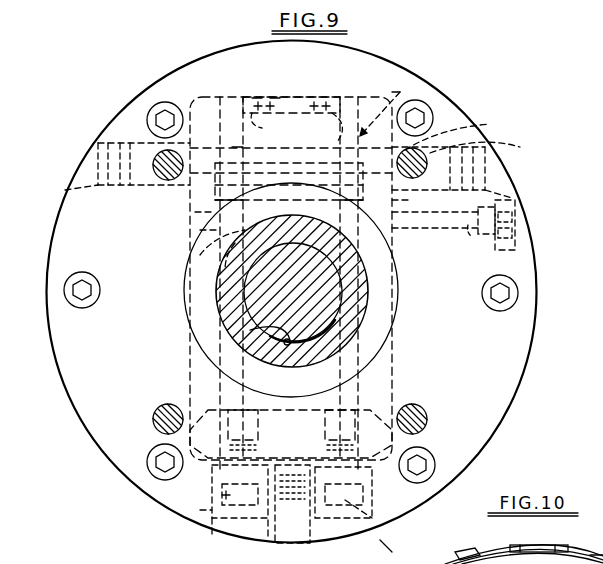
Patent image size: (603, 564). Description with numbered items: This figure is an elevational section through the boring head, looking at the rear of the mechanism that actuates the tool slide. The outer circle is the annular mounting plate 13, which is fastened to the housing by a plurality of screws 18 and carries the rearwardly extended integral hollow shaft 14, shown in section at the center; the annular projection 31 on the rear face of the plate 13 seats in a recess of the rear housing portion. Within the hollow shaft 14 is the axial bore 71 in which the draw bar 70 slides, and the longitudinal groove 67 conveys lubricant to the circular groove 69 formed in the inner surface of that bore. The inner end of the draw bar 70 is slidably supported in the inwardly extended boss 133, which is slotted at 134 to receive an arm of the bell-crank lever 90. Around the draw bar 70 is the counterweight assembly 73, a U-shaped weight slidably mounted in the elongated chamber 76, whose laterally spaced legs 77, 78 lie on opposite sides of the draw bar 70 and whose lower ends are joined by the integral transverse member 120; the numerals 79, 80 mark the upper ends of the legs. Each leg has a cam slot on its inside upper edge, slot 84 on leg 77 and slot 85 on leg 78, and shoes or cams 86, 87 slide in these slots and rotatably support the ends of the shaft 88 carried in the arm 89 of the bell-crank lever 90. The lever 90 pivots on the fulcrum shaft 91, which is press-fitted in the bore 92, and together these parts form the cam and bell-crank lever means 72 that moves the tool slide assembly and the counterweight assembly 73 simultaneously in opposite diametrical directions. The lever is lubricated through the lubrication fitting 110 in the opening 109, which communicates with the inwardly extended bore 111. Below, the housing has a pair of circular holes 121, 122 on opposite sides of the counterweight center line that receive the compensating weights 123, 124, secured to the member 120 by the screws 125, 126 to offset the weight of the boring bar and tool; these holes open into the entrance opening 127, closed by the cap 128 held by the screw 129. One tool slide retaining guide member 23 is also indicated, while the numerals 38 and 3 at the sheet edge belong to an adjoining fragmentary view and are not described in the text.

In FIG. 9, the annular mounting plate 13 is at (497, 396).
In FIG. 9, the screws 18 is at (158, 118).
In FIG. 9, the hollow shaft 14 is at (367, 302).
In FIG. 9, the annular projection 31 is at (392, 274).
In FIG. 9, the draw bar 70 is at (347, 325).
In FIG. 9, the axial bore 71 is at (345, 312).
In FIG. 9, the circular groove 69 is at (343, 303).
In FIG. 9, the longitudinal groove 67 is at (347, 322).
In FIG. 9, the cam and bell-crank lever means 72 is at (342, 97).
In FIG. 9, the counterweight assembly 73 is at (400, 92).
In FIG. 9, the upper end of weight leg 80 is at (328, 106).
In FIG. 9, the arm of bell-crank lever 89 is at (256, 97).
In FIG. 9, the bell-crank lever 90 is at (274, 107).
In FIG. 9, the cam slot 84 is at (380, 116).
In FIG. 9, the upper end of weight leg 79 is at (232, 147).
In FIG. 9, the cam slot 85 is at (190, 193).
In FIG. 9, the shaft 88 is at (395, 198).
In FIG. 9, the weight leg 78 is at (427, 208).
In FIG. 9, the fulcrum shaft 91 is at (465, 132).
In FIG. 9, the bore 92 is at (489, 146).
In FIG. 9, the opening 109 is at (520, 207).
In FIG. 9, the lubrication fitting 110 is at (522, 234).
In FIG. 9, the inwardly extended bore 111 is at (472, 240).
In FIG. 9, the elongated chamber 76 is at (195, 212).
In FIG. 9, the weight leg 77 is at (200, 230).
In FIG. 9, the slot 134 is at (205, 252).
In FIG. 9, the inwardly extended boss 133 is at (185, 280).
In FIG. 9, the shoe or cam 87 is at (242, 209).
In FIG. 9, the shoe or cam 86 is at (348, 205).
In FIG. 9, the integral transverse member 120 is at (262, 430).
In FIG. 9, the circular hole 122 is at (220, 489).
In FIG. 9, the compensating weight 124 is at (215, 489).
In FIG. 9, the circular hole 121 is at (372, 476).
In FIG. 9, the compensating weight 123 is at (372, 491).
In FIG. 9, the screw 129 is at (306, 538).
In FIG. 9, the cap 128 is at (268, 540).
In FIG. 9, the entrance opening 127 is at (212, 535).
In FIG. 9, the screw 126 is at (200, 510).
In FIG. 9, the screw 125 is at (360, 508).
In FIG. 9, the tool slide retaining guide member 23 is at (400, 552).
In FIG. 10, the FIG.10 segment 38 is at (555, 548).
In FIG. 10, the FIG.10 element 3 is at (588, 555).